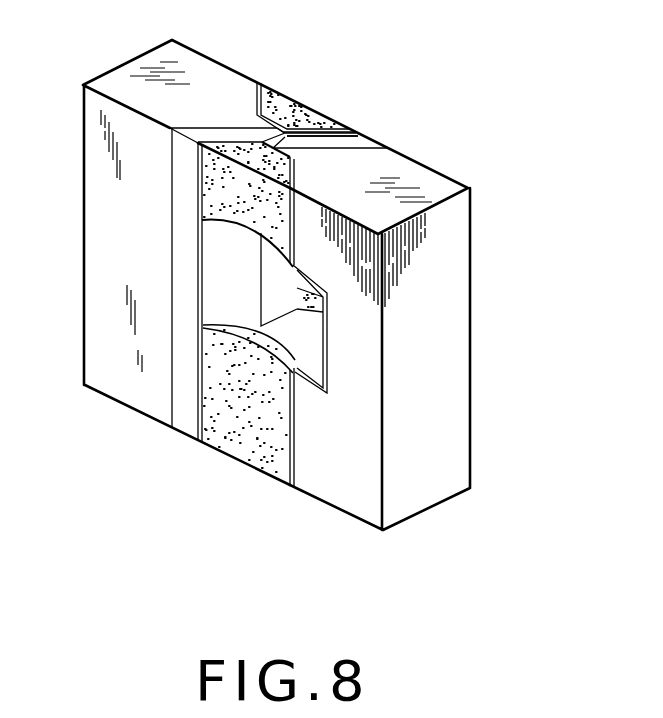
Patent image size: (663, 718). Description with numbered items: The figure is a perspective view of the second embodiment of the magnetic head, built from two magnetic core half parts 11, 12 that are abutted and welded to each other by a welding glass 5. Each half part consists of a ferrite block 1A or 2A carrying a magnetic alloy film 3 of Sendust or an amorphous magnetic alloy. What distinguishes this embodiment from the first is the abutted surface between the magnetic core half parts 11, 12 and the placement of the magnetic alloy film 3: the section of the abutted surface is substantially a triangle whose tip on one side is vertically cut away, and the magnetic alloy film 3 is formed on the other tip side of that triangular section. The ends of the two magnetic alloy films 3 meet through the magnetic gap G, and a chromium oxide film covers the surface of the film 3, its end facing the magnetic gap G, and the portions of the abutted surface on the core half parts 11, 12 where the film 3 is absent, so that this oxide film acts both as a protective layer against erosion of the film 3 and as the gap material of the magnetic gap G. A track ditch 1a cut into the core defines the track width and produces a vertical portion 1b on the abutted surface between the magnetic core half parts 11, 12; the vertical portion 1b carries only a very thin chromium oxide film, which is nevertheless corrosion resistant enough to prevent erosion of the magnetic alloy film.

The magnetic core half part 11 is at (116, 51).
The magnetic core half part 12 is at (470, 170).
The ferrite block 1A is at (128, 392).
The ferrite block 2A is at (429, 498).
The magnetic alloy film 3 is at (177, 175).
The welding glass 5 is at (212, 197).
The track ditch 1a is at (257, 98).
The vertical portion 1b is at (295, 179).
The magnetic gap G is at (288, 143).